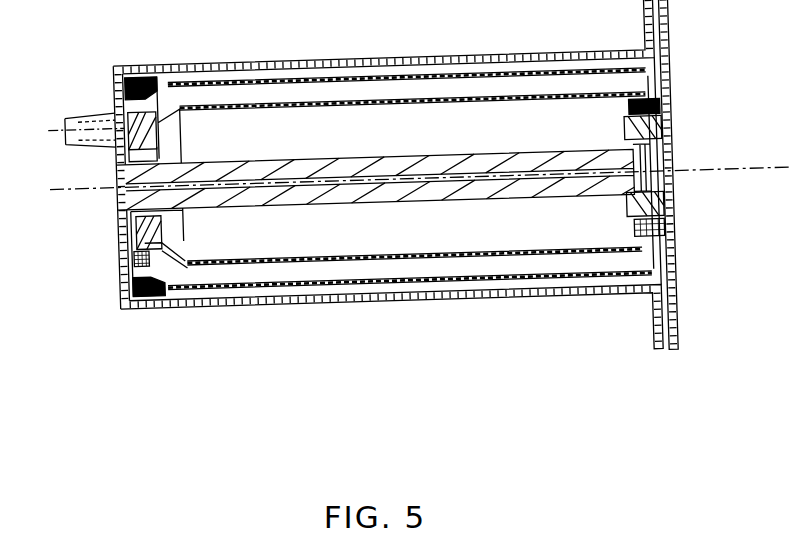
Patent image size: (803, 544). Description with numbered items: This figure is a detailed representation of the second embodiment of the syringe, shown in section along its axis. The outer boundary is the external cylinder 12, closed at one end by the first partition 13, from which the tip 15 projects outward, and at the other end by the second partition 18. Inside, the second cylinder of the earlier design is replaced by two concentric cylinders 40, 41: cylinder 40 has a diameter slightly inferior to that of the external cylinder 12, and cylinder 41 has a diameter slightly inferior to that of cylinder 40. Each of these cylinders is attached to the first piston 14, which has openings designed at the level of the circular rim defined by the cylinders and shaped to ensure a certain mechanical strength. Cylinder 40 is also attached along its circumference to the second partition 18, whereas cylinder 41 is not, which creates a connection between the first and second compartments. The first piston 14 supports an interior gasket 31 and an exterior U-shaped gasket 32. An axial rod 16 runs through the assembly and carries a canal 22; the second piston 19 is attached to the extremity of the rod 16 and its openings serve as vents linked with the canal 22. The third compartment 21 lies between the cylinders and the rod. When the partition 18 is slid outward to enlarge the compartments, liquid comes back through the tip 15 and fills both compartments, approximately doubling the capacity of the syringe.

The external cylinder 12 is at (247, 66).
The first partition 13 is at (118, 277).
The first piston 14 is at (165, 240).
The tip 15 is at (90, 114).
The axial rod 16 is at (331, 193).
The second partition 18 is at (672, 143).
The second piston 19 is at (615, 137).
The third compartment 21 is at (541, 222).
The canal 22 is at (458, 180).
The interior gasket 31 is at (162, 73).
The exterior U-shaped gasket 32 is at (148, 296).
The cylinder 40 is at (332, 78).
The cylinder 41 is at (405, 100).